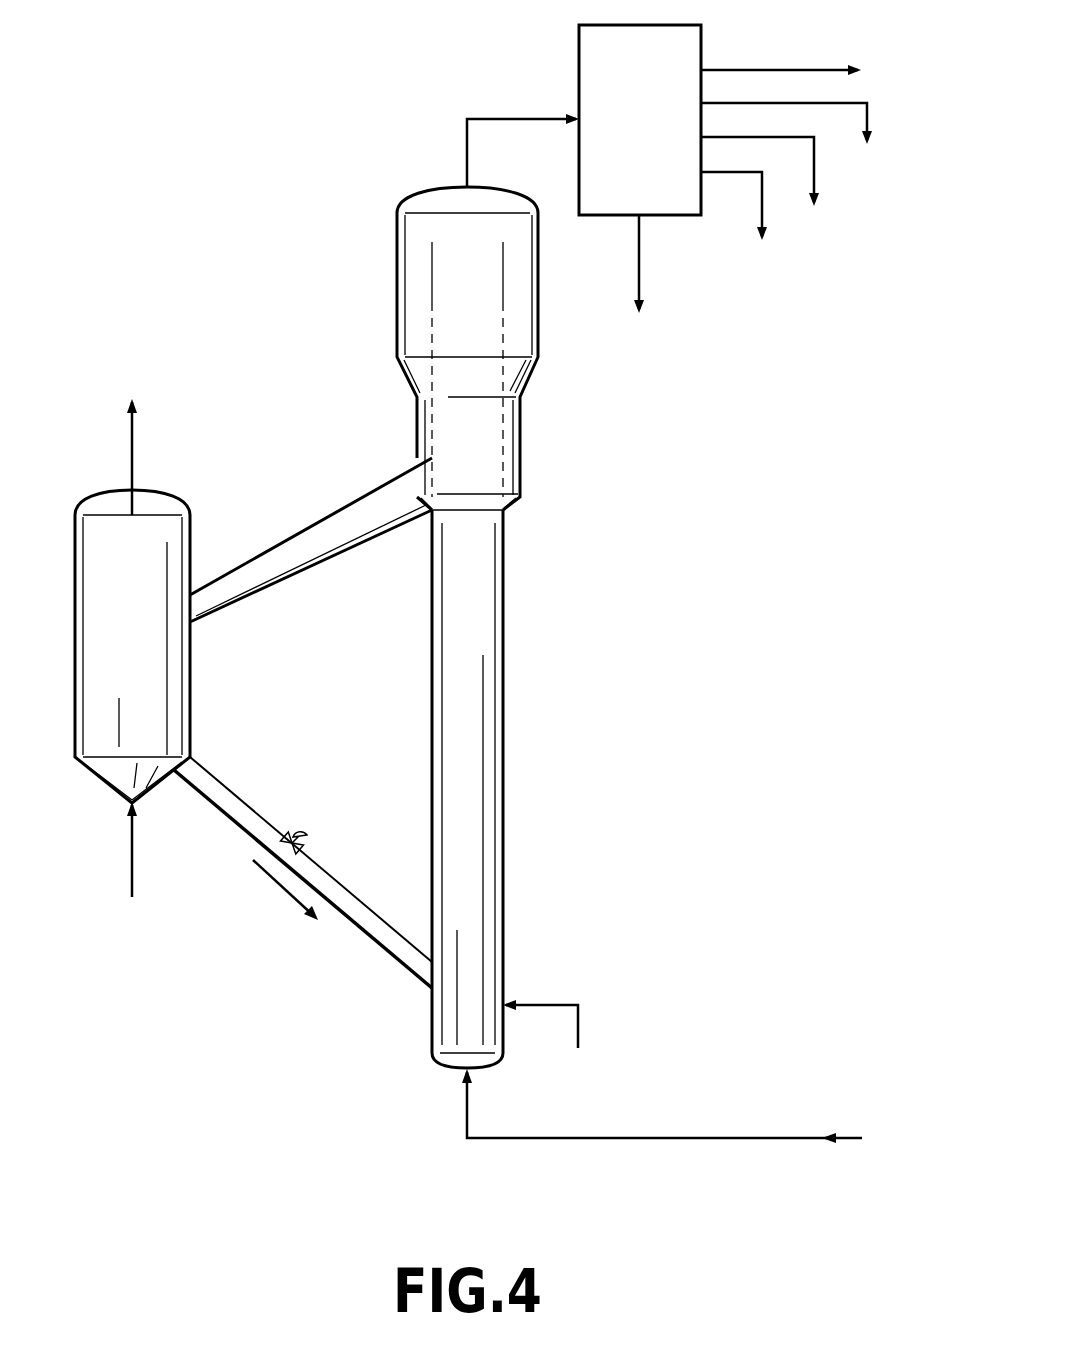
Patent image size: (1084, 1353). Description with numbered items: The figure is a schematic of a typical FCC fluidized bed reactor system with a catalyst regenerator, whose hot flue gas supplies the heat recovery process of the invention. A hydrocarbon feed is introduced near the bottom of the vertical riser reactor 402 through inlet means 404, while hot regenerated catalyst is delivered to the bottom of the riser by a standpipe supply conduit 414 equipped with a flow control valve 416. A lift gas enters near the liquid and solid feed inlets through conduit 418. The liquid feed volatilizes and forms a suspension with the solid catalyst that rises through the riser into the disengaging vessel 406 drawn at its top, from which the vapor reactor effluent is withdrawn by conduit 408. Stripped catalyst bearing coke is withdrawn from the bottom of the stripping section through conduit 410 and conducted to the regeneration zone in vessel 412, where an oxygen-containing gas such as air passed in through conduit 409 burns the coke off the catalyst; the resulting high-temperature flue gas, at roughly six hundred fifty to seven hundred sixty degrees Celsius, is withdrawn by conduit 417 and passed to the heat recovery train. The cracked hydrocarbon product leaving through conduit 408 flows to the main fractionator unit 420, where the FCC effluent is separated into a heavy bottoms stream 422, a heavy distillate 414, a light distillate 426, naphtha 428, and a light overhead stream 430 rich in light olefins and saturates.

The riser reactor 402 is at (448, 633).
The inlet means 404 is at (560, 1003).
The disengaging vessel 406 is at (538, 320).
The conduit 408 is at (500, 119).
The conduit 409 is at (132, 870).
The conduit 410 is at (308, 527).
The vessel 412 is at (148, 675).
The standpipe supply conduit 414 is at (278, 810).
The flow control valve 416 is at (306, 836).
The conduit 417 is at (132, 455).
The conduit 418 is at (483, 1140).
The main fractionator unit 420 is at (660, 77).
The heavy bottoms stream 422 is at (639, 265).
The light distillate 426 is at (814, 165).
The naphtha 428 is at (855, 103).
The light overhead stream 430 is at (802, 68).